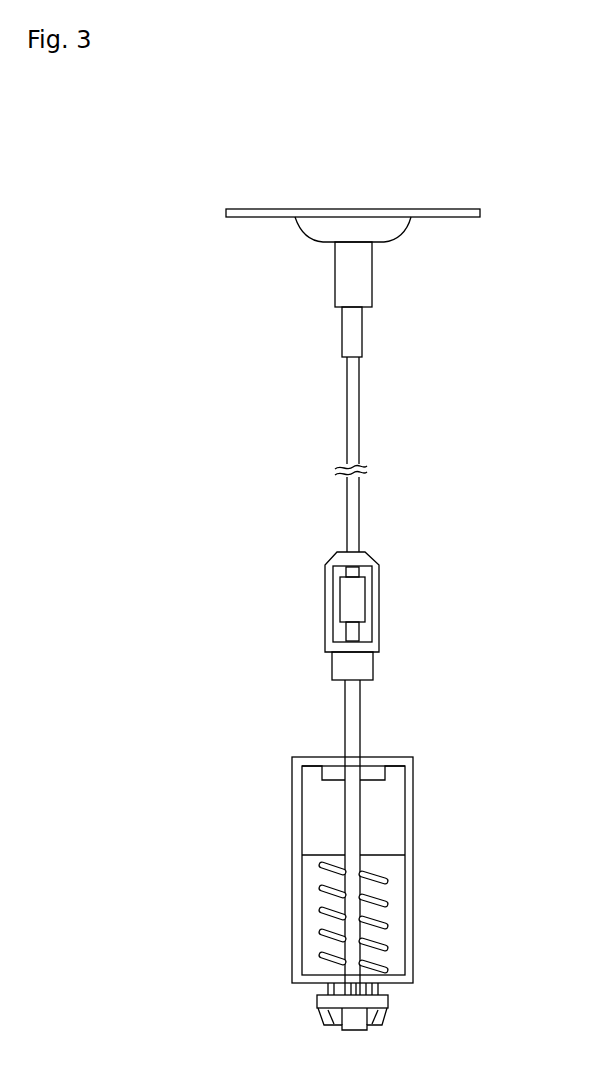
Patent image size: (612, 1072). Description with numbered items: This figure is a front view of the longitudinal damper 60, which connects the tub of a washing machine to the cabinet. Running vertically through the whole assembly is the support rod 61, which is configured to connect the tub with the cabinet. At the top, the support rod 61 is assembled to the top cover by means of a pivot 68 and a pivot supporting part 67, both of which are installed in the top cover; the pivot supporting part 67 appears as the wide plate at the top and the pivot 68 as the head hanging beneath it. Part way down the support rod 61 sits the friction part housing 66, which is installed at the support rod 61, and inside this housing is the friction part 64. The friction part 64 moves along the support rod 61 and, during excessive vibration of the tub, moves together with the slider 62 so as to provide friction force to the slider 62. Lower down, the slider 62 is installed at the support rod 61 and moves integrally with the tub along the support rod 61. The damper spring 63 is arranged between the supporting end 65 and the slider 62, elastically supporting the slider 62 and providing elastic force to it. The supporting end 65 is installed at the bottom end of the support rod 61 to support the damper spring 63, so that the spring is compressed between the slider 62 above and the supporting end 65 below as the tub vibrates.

The longitudinal damper 60 is at (74, 150).
The support rod 61 is at (359, 398).
The slider 62 is at (410, 833).
The damper spring 63 is at (383, 900).
The friction part 64 is at (349, 600).
The supporting end 65 is at (393, 1013).
The friction part housing 66 is at (362, 667).
The pivot supporting part 67 is at (425, 210).
The pivot 68 is at (360, 274).